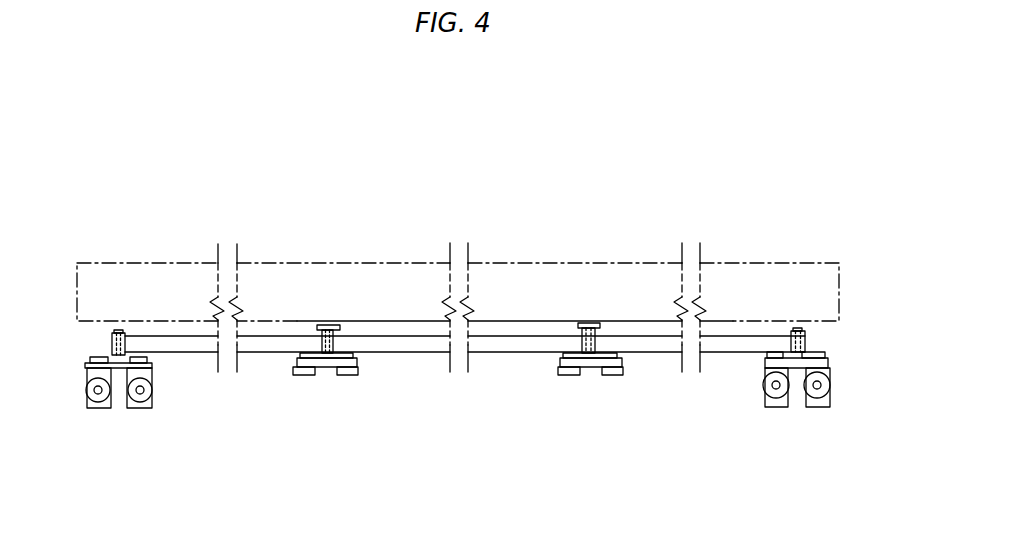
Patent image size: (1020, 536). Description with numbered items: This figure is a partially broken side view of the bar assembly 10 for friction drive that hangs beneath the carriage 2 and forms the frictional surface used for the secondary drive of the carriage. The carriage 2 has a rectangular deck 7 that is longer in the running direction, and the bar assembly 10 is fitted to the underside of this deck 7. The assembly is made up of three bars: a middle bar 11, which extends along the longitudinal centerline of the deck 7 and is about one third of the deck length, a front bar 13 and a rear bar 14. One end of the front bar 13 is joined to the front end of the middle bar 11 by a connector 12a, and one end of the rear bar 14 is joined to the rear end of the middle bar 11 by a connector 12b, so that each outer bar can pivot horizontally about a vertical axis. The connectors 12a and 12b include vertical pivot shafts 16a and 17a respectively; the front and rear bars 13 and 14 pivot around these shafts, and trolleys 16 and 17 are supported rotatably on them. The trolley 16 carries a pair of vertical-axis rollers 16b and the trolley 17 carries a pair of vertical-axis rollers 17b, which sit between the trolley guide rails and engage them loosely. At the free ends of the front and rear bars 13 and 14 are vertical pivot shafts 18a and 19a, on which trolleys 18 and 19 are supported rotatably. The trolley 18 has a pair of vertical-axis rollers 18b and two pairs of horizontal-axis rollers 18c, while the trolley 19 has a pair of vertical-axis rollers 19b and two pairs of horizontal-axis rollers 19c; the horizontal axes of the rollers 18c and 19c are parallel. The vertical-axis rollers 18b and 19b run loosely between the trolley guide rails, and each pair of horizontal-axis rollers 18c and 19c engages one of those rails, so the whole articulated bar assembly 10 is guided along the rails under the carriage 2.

The carriage 2 is at (503, 257).
The deck 7 is at (418, 290).
The bar assembly 10 is at (734, 321).
The middle bar 11 is at (437, 347).
The connector 12a is at (566, 336).
The connector 12b is at (351, 337).
The front bar 13 is at (658, 345).
The rear bar 14 is at (198, 345).
The trolley 16 is at (615, 353).
The vertical pivot shaft 16a is at (588, 323).
The vertical-axis rollers 16b is at (613, 375).
The trolley 17 is at (315, 355).
The vertical pivot shaft 17a is at (332, 325).
The vertical-axis rollers 17b is at (341, 375).
The trolley 18 is at (796, 388).
The vertical pivot shaft 18a is at (798, 328).
The vertical-axis rollers 18b is at (827, 368).
The horizontal-axis rollers 18c is at (768, 392).
The trolley 19 is at (116, 400).
The vertical pivot shaft 19a is at (117, 330).
The vertical-axis rollers 19b is at (153, 370).
The horizontal-axis rollers 19c is at (87, 390).